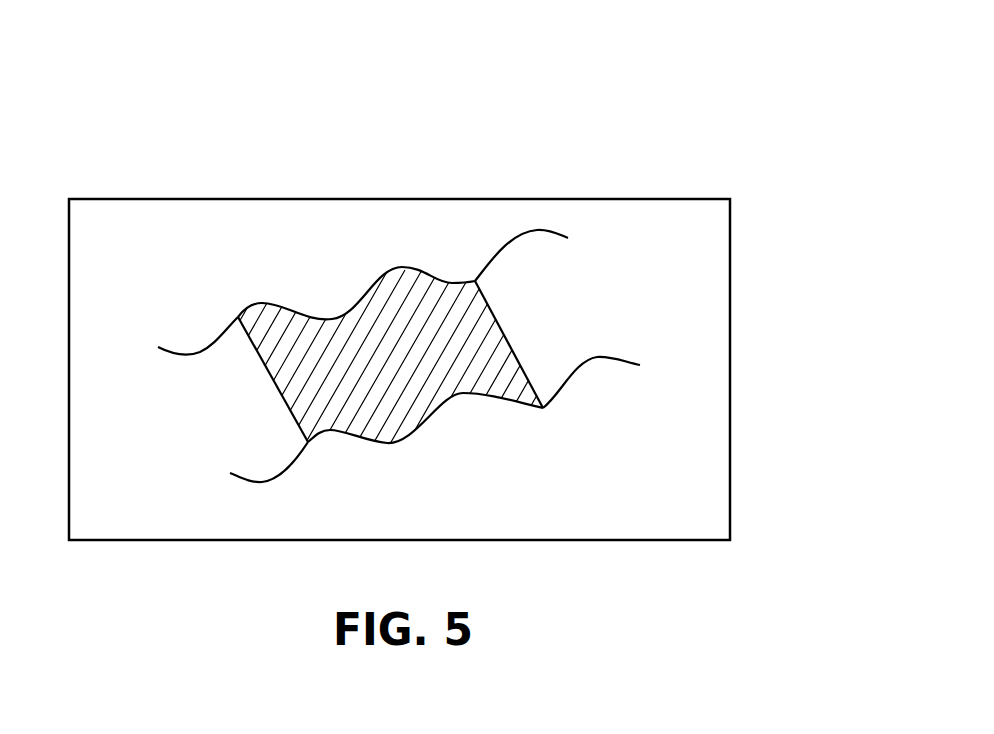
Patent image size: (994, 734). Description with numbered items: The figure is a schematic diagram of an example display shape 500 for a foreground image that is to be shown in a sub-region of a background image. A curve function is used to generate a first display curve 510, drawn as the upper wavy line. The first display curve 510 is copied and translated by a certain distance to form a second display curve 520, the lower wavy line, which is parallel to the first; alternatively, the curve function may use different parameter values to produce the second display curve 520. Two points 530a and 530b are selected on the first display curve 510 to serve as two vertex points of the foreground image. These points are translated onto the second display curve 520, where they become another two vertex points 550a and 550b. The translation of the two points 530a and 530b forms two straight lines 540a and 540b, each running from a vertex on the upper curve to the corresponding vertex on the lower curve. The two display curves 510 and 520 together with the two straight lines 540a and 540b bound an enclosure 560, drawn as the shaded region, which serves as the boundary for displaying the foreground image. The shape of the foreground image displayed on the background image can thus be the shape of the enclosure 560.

The display shape 500 is at (835, 140).
The first display curve 510 is at (205, 352).
The second display curve 520 is at (597, 358).
The first point 530a is at (238, 317).
The second point 530b is at (475, 281).
The first straight line 540a is at (278, 390).
The second straight line 540b is at (510, 338).
The third vertex point 550a is at (308, 442).
The fourth vertex point 550b is at (543, 408).
The enclosure 560 is at (410, 413).